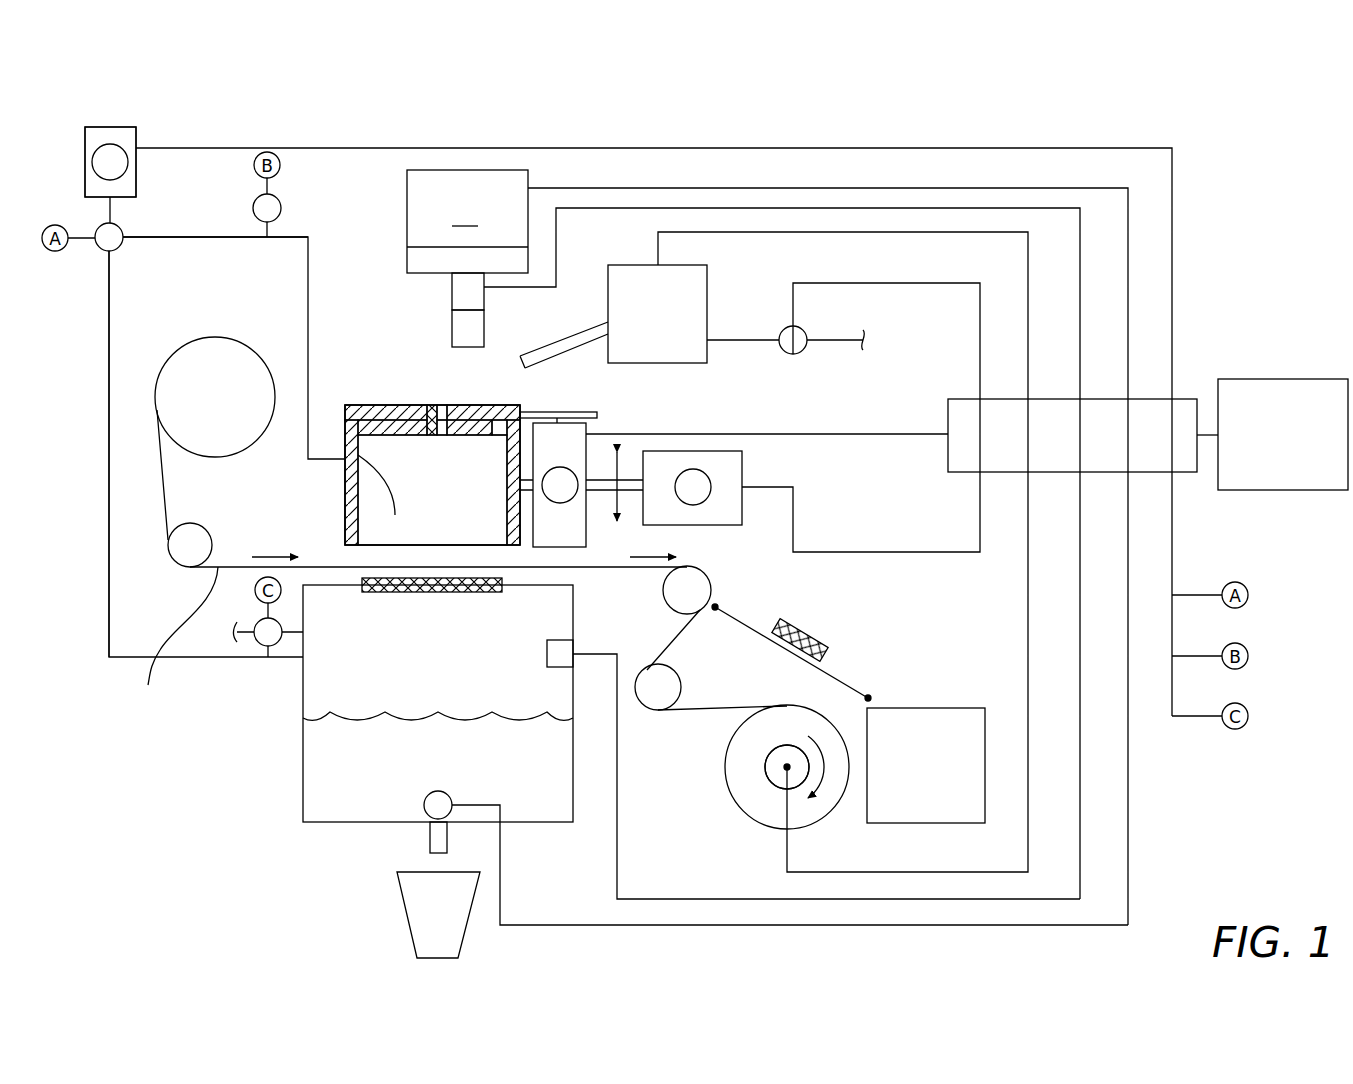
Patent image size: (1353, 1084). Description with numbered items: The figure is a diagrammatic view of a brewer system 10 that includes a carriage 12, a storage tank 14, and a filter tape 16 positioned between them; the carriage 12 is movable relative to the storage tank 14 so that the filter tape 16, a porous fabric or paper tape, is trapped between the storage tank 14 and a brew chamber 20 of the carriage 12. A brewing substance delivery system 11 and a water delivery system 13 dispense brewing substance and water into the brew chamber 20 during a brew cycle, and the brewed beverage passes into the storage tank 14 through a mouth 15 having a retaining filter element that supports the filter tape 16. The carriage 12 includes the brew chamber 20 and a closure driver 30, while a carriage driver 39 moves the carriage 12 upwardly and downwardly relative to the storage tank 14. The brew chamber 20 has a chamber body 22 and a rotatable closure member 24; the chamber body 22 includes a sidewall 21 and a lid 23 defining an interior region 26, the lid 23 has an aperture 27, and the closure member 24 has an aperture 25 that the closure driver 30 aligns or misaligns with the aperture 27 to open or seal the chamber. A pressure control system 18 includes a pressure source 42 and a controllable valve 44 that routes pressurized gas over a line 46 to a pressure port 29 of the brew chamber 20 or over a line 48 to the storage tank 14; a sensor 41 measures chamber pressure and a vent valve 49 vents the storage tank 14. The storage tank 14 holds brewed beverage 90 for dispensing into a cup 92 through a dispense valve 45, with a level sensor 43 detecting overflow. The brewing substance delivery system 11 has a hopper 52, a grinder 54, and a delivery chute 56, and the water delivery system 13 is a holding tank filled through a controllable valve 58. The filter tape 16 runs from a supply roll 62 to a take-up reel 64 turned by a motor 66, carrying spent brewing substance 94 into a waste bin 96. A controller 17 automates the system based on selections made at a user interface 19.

The brewer system 10 is at (1243, 152).
The brewing substance delivery system 11 is at (467, 185).
The carriage 12 is at (409, 396).
The water delivery system 13 is at (626, 258).
The storage tank 14 is at (294, 800).
The mouth 15 is at (372, 596).
The filter tape 16 is at (459, 564).
The controller 17 is at (1184, 390).
The pressure control system 18 is at (135, 126).
The user interface 19 is at (1290, 378).
The brew chamber 20 is at (368, 397).
The sidewall 21 is at (340, 520).
The chamber body 22 is at (340, 483).
The lid 23 is at (397, 446).
The closure member 24 is at (350, 400).
The aperture 25 is at (458, 398).
The interior region 26 is at (447, 540).
The aperture 27 is at (471, 446).
The pressure port 29 is at (352, 458).
The closure driver 30 is at (593, 453).
The carriage driver 39 is at (714, 449).
The sensor 41 is at (256, 198).
The pressure source 42 is at (110, 126).
The level sensor 43 is at (545, 652).
The controllable valve 44 is at (123, 228).
The dispense valve 45 is at (425, 795).
The line 46 is at (197, 240).
The line 48 is at (108, 300).
The vent valve 49 is at (268, 648).
The hopper 52 is at (467, 214).
The grinder 54 is at (490, 293).
The delivery chute 56 is at (490, 330).
The controllable valve 58 is at (808, 351).
The supply roll 62 is at (243, 336).
The take-up reel 64 is at (742, 819).
The motor 66 is at (765, 762).
The brewed beverage 90 is at (451, 761).
The cup 92 is at (395, 918).
The spent brewing substance 94 is at (818, 630).
The waste bin 96 is at (928, 705).